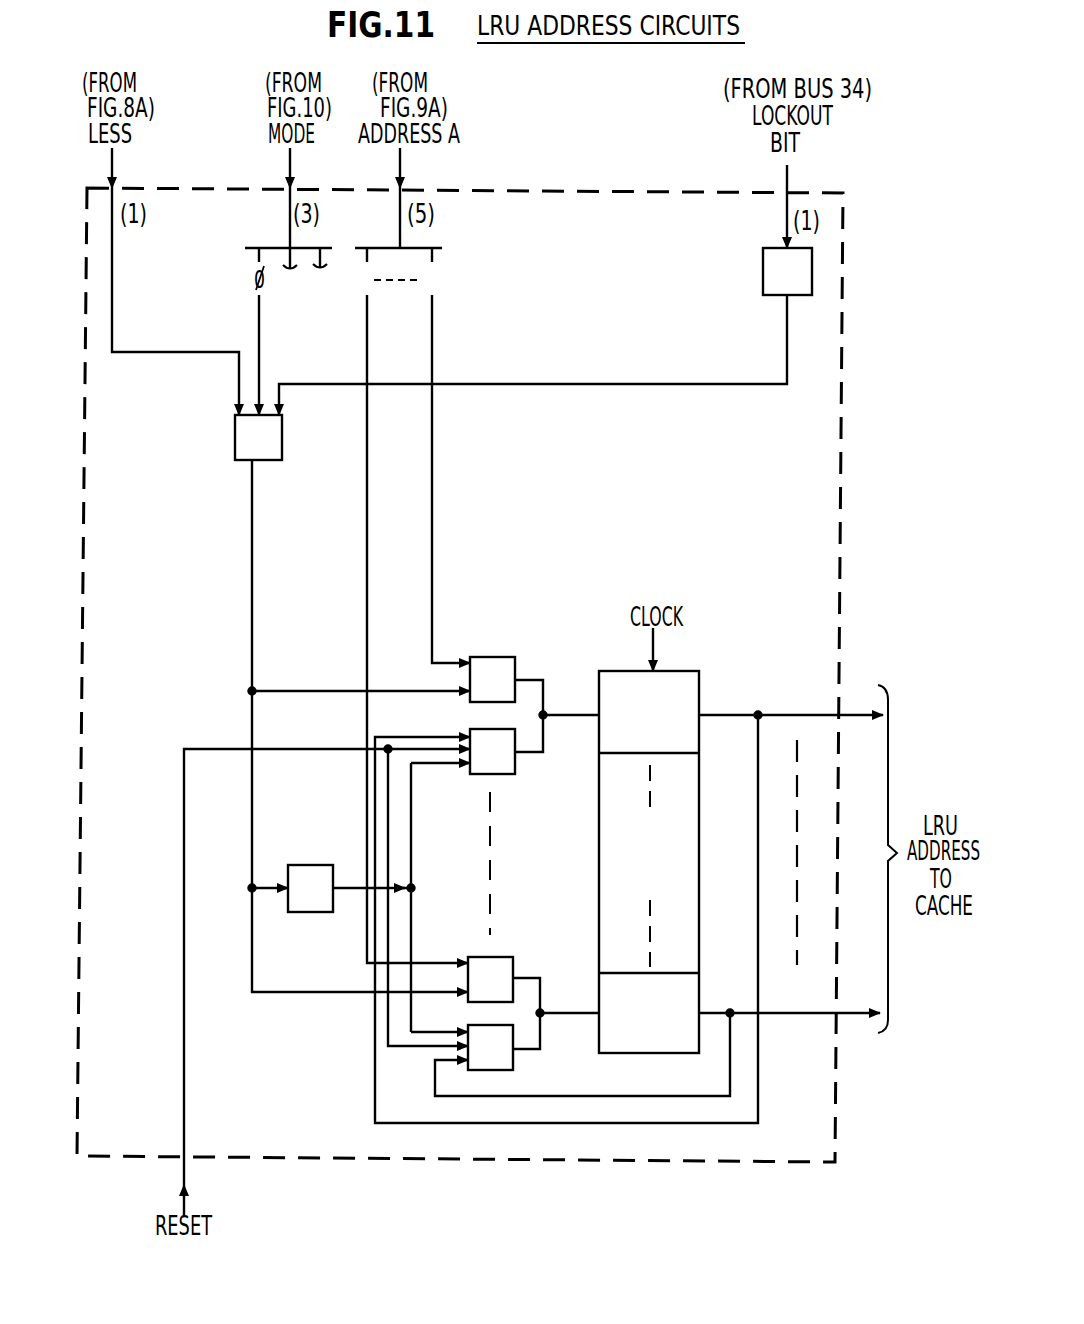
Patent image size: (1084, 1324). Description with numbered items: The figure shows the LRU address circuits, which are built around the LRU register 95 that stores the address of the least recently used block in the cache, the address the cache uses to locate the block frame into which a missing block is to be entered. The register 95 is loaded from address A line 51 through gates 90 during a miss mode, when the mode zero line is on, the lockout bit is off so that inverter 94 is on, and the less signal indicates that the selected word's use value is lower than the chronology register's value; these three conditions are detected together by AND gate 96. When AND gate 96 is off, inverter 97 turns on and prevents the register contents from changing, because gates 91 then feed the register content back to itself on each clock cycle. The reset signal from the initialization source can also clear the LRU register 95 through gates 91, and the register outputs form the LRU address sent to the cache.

The address A line 51 is at (404, 152).
The gates 90 is at (500, 657).
The gates 91 is at (505, 774).
The inverter 94 is at (763, 272).
The LRU register 95 is at (690, 690).
The AND gate 96 is at (235, 443).
The inverter 97 is at (317, 865).